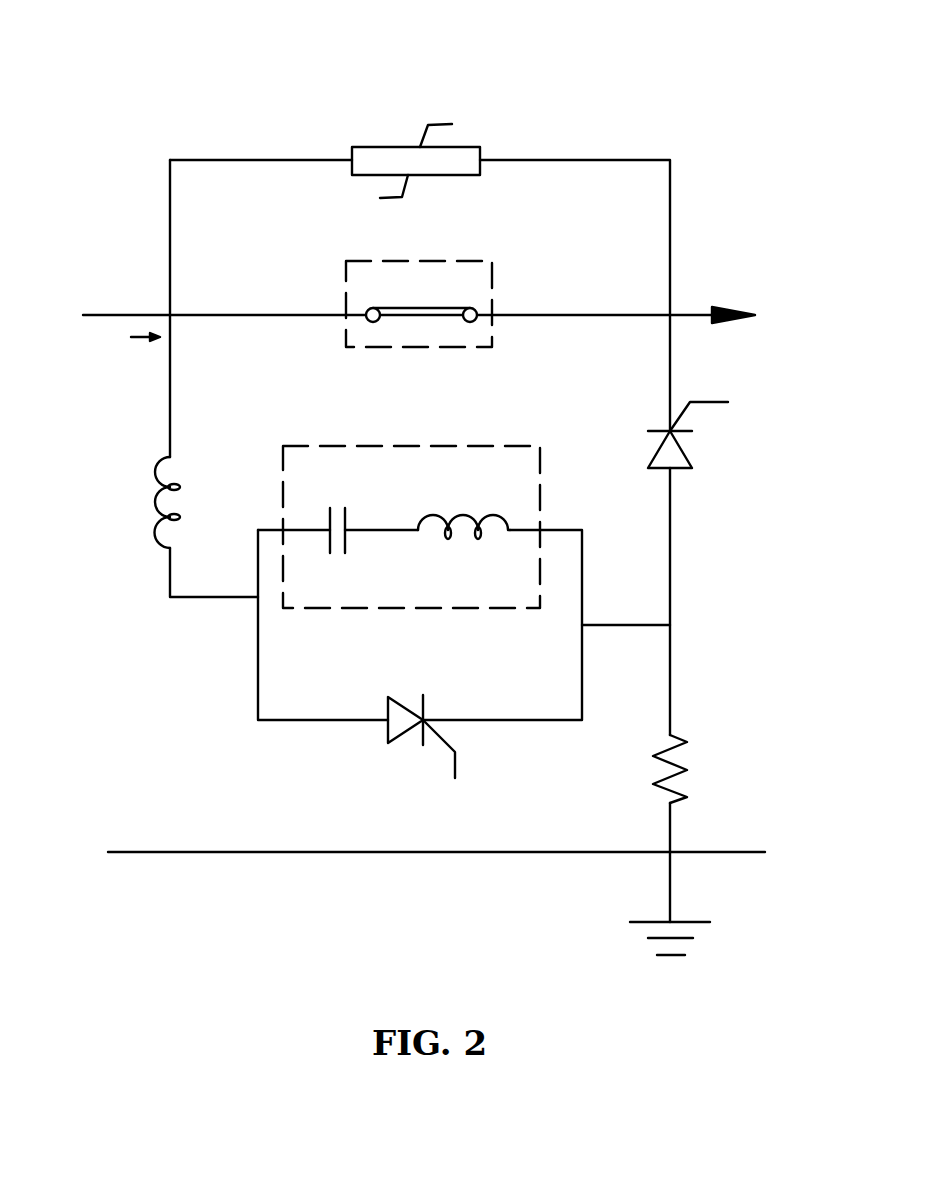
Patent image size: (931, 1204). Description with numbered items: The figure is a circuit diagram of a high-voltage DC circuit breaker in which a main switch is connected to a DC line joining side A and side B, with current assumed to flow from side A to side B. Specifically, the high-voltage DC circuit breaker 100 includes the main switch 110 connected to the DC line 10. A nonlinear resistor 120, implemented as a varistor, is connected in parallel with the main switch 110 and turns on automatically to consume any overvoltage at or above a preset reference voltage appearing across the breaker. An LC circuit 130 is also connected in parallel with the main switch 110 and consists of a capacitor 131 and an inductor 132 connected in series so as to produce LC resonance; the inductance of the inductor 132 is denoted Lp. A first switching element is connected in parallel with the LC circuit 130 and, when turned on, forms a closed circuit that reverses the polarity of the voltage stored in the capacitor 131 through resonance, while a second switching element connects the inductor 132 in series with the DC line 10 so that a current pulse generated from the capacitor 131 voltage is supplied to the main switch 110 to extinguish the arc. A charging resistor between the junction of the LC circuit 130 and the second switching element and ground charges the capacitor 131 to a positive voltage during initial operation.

The high-voltage DC circuit breaker 100 is at (603, 138).
The DC line 10 is at (140, 311).
The main switch 110 is at (356, 259).
The nonlinear resistor 120 is at (390, 147).
The LC circuit 130 is at (372, 442).
The capacitor 131 is at (348, 534).
The inductor 132 is at (450, 532).